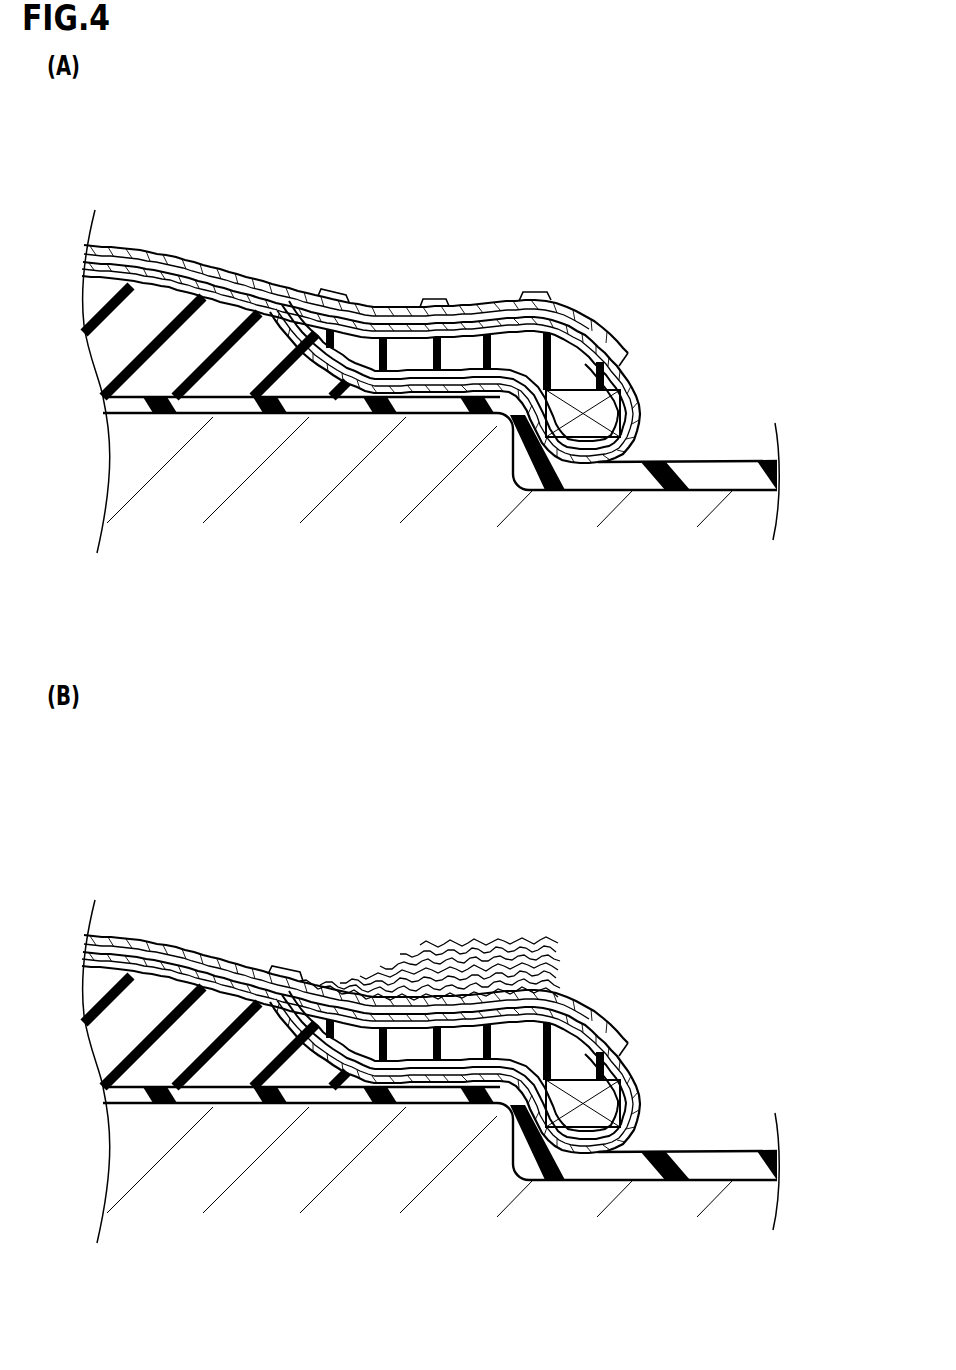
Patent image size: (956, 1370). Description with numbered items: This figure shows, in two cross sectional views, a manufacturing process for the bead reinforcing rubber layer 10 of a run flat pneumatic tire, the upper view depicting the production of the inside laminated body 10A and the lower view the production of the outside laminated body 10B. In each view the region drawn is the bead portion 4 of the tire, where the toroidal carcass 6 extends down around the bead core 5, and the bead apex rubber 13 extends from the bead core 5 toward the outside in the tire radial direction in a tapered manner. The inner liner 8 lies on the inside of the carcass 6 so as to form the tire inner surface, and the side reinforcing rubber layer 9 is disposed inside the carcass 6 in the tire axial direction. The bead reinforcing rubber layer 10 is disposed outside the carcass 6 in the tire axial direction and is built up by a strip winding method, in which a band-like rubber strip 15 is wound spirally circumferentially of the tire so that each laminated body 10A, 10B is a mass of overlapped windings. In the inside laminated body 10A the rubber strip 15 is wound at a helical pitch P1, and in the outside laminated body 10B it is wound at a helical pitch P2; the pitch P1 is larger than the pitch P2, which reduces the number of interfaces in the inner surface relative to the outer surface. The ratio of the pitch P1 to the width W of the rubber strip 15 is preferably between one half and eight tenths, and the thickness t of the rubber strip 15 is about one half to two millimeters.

The bead portion 4 is at (668, 340).
The bead core 5 is at (610, 423).
The carcass 6 is at (171, 253).
The inner liner 8 is at (240, 403).
The side reinforcing rubber layer 9 is at (113, 272).
The bead reinforcing rubber layer 10 is at (380, 294).
The inside laminated body 10A is at (241, 955).
The outside laminated body 10B is at (323, 953).
The bead apex rubber 13 is at (583, 370).
The rubber strip 15 is at (573, 307).
The width of the rubber strip W is at (232, 220).
The helical pitch of the inside laminated body P1 is at (546, 230).
The helical pitch of the outside laminated body P2 is at (440, 909).
The thickness of the rubber strip t is at (566, 352).